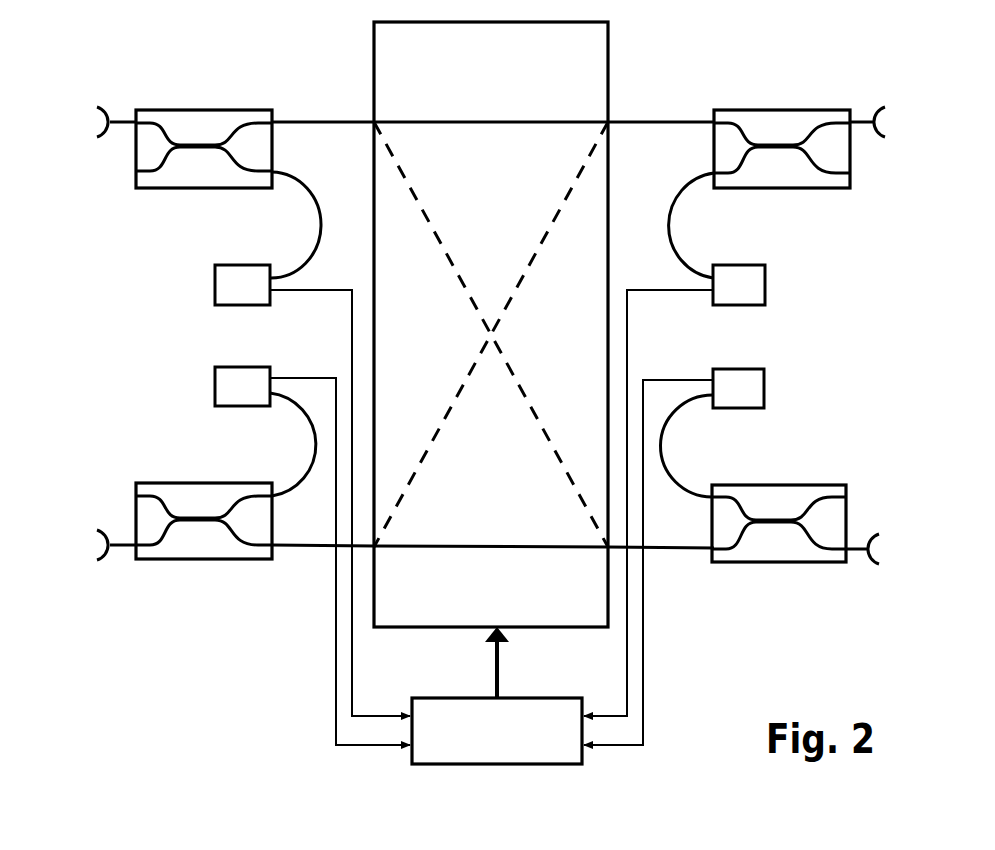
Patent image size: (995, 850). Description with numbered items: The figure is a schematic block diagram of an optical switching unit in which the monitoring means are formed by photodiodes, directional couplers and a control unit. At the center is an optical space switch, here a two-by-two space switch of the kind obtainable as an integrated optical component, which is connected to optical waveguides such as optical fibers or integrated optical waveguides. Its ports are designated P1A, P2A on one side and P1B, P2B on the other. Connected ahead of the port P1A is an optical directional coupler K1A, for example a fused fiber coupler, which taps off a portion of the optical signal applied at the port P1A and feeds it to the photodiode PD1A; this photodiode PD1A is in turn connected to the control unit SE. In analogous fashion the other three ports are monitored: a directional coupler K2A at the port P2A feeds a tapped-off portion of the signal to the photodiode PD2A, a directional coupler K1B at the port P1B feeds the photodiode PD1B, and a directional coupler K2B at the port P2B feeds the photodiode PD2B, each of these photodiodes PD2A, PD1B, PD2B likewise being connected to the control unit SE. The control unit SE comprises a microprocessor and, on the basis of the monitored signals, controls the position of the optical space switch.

The optical directional coupler K1A is at (184, 123).
The optical directional coupler K2A is at (196, 533).
The optical directional coupler K1B is at (801, 125).
The optical directional coupler K2B is at (783, 538).
The photodiode PD1A is at (237, 287).
The photodiode PD2A is at (237, 388).
The photodiode PD1B is at (745, 290).
The photodiode PD2B is at (743, 392).
The port P1A is at (74, 122).
The port P2A is at (74, 545).
The port P1B is at (907, 122).
The port P2B is at (904, 550).
The control unit SE is at (547, 737).